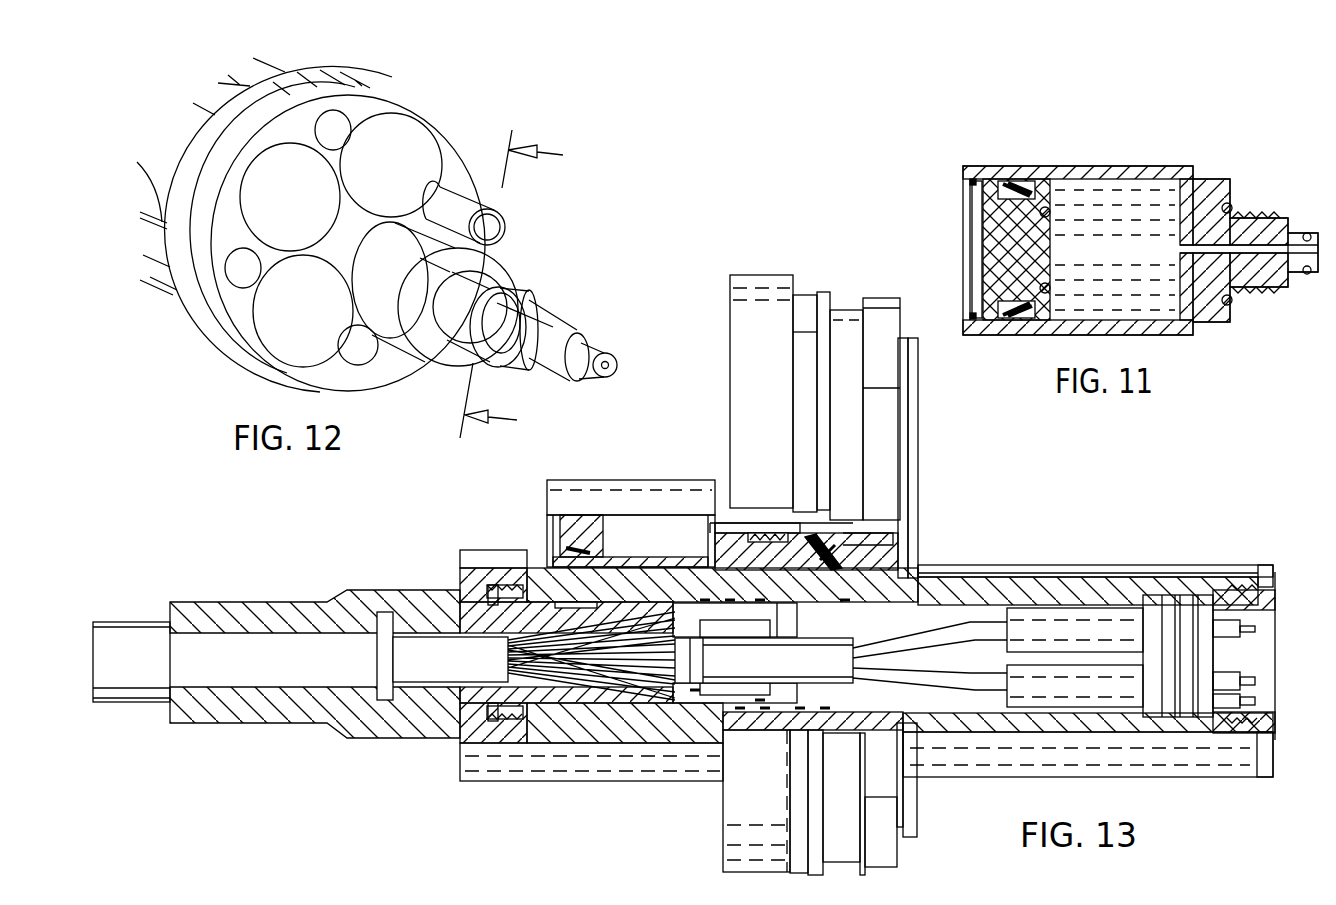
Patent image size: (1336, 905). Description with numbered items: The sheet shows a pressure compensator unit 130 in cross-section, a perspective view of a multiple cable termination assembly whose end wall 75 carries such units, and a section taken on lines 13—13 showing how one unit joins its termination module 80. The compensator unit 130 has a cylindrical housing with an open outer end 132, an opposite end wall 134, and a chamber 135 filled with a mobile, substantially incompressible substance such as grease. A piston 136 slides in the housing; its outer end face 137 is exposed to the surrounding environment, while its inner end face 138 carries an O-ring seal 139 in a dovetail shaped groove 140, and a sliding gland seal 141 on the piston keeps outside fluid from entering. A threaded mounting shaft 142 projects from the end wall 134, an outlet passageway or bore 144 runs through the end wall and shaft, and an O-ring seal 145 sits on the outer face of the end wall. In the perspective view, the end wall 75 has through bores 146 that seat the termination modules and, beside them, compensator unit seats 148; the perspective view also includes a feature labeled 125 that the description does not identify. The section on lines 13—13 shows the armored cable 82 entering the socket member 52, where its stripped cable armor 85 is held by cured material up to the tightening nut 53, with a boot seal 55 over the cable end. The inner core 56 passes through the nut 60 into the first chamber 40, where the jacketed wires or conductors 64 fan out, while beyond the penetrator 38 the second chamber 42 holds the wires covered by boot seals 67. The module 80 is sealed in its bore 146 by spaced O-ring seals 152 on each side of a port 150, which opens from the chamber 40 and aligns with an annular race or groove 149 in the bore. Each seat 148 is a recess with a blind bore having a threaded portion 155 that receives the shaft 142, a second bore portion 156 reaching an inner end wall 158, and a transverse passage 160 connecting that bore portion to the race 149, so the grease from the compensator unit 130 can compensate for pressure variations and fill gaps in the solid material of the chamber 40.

In FIG. 12, the section lines 13— 13 is at (535, 287).
In FIG. 13, the high pressure barrier or penetrator 38 is at (1207, 717).
In FIG. 13, the first chamber 40 is at (948, 615).
In FIG. 13, the second chamber 42 is at (1263, 673).
In FIG. 13, the socket member 52 is at (530, 590).
In FIG. 13, the tightening nut 53 is at (470, 550).
In FIG. 13, the boot seal 55 is at (282, 604).
In FIG. 13, the inner core 56 is at (817, 683).
In FIG. 13, the nut 60 is at (792, 617).
In FIG. 13, the jacketed electrical wires or conductors 64 is at (937, 675).
In FIG. 13, the boot seals 67 is at (1223, 677).
In FIG. 12, the end wall 75 is at (230, 303).
In FIG. 13, the end wall 75 is at (855, 305).
In FIG. 12, the termination module 80 is at (407, 327).
In FIG. 13, the termination module 80 is at (620, 765).
In FIG. 13, the armored cable 82 is at (270, 660).
In FIG. 13, the stripped cable armor 85 is at (585, 677).
In FIG. 12, the cable 125 is at (212, 112).
In FIG. 12, the pressure compensator unit 130 is at (508, 220).
In FIG. 11, the pressure compensator unit 130 is at (1024, 148).
In FIG. 13, the pressure compensator unit 130 is at (630, 490).
In FIG. 11, the open outer end 132 is at (967, 218).
In FIG. 11, the end wall 134 is at (1183, 193).
In FIG. 11, the chamber 135 is at (1190, 333).
In FIG. 11, the piston 136 is at (993, 245).
In FIG. 11, the outer end face 137 is at (980, 197).
In FIG. 11, the inner end face 138 is at (1050, 193).
In FIG. 11, the O-ring seal 139 is at (1052, 290).
In FIG. 11, the dovetail shaped groove 140 is at (1040, 288).
In FIG. 11, the sliding gland seal 141 is at (1013, 320).
In FIG. 11, the threaded mounting shaft 142 is at (1272, 222).
In FIG. 13, the threaded mounting shaft 142 is at (743, 533).
In FIG. 11, the outlet passageway or bore 144 is at (1247, 250).
In FIG. 13, the outlet passageway or bore 144 is at (723, 523).
In FIG. 11, the O-ring seal 145 is at (1232, 298).
In FIG. 12, the through bores 146 is at (415, 145).
In FIG. 13, the through bores 146 is at (887, 727).
In FIG. 12, the compensator unit seat 148 is at (340, 122).
In FIG. 13, the annular race or groove 149 is at (812, 723).
In FIG. 13, the port 150 is at (793, 727).
In FIG. 13, the O-ring seals 152 is at (735, 560).
In FIG. 13, the threaded portion 155 is at (780, 537).
In FIG. 13, the second bore portion 156 is at (820, 527).
In FIG. 13, the inner end wall 158 is at (850, 530).
In FIG. 13, the transverse passage 160 is at (828, 557).